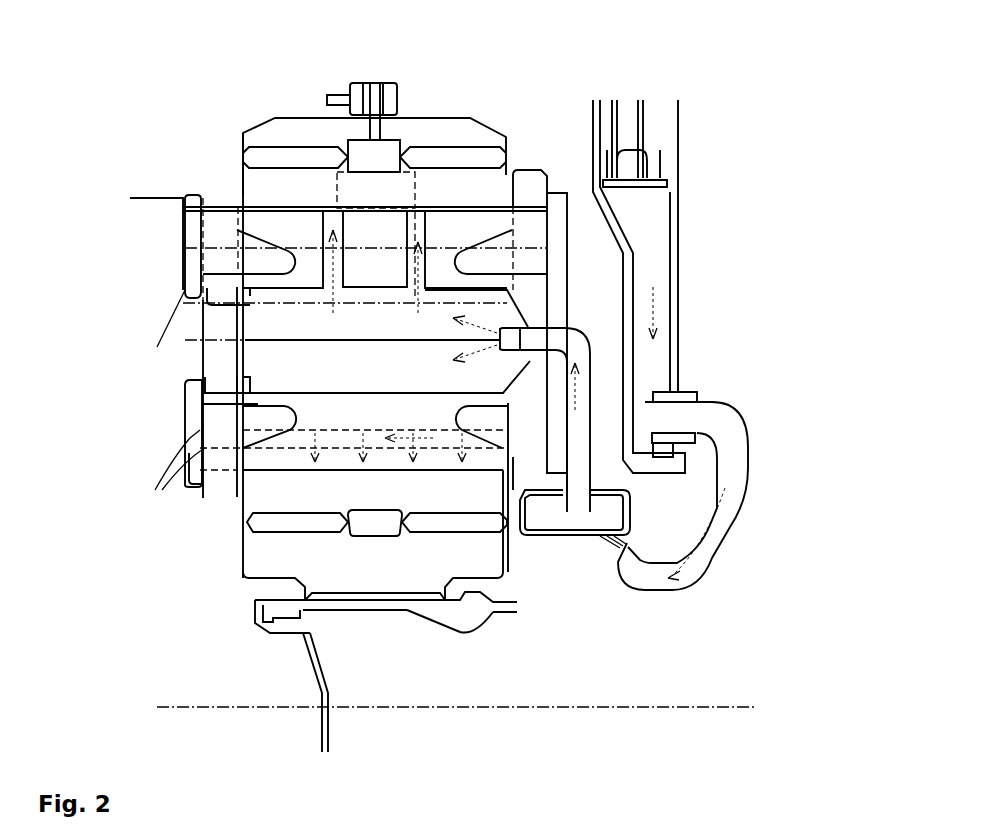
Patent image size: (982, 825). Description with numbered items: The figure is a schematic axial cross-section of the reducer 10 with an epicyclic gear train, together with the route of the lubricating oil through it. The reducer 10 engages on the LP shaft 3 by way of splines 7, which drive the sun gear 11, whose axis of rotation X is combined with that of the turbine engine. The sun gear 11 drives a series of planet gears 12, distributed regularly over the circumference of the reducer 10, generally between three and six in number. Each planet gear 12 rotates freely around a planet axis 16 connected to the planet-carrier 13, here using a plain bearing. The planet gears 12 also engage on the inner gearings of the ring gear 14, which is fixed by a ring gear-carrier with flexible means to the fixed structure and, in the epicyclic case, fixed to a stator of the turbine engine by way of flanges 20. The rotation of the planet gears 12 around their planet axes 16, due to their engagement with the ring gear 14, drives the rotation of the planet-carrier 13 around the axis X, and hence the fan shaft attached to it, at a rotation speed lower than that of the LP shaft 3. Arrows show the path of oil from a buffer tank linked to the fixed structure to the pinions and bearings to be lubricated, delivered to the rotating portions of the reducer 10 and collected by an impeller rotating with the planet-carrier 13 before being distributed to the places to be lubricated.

The reducer 10 is at (223, 92).
The flanges 20 is at (372, 82).
The ring gear 14 is at (482, 140).
The planet gears 12 is at (497, 175).
The planet-carrier 13 is at (220, 180).
The planet axis 16 is at (533, 320).
The sun gear 11 is at (265, 547).
The splines 7 is at (365, 603).
The LP shaft 3 is at (472, 613).
The axis X is at (190, 707).